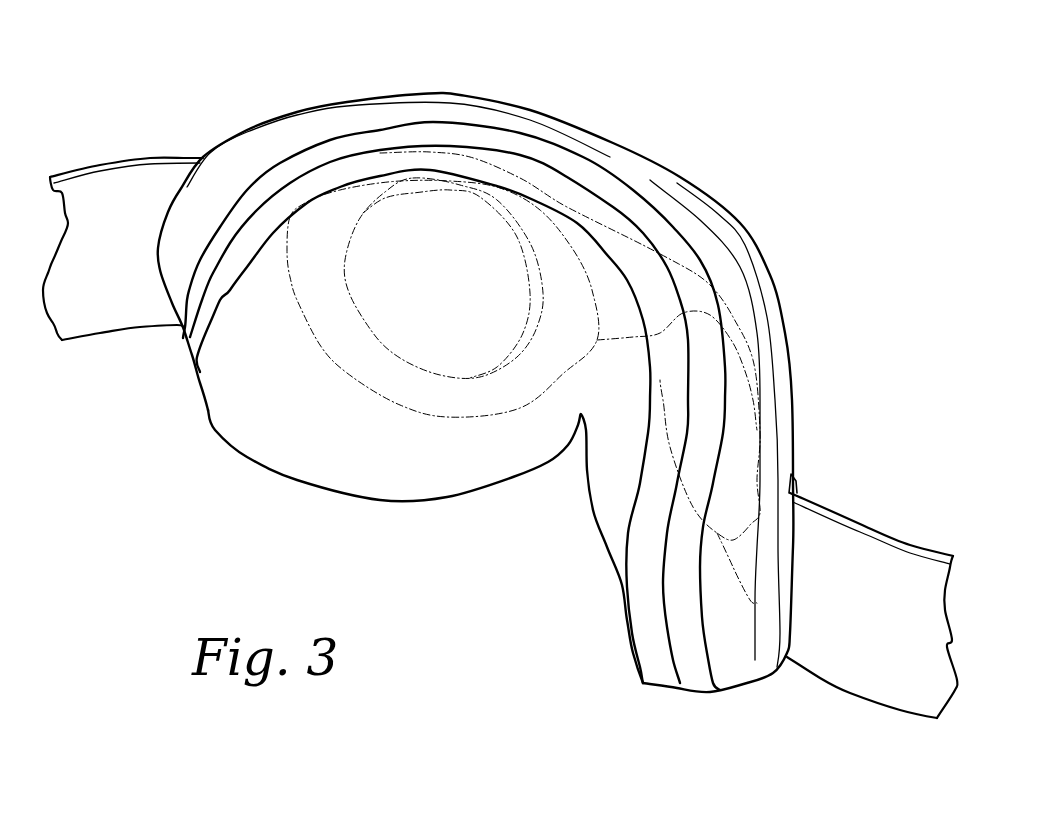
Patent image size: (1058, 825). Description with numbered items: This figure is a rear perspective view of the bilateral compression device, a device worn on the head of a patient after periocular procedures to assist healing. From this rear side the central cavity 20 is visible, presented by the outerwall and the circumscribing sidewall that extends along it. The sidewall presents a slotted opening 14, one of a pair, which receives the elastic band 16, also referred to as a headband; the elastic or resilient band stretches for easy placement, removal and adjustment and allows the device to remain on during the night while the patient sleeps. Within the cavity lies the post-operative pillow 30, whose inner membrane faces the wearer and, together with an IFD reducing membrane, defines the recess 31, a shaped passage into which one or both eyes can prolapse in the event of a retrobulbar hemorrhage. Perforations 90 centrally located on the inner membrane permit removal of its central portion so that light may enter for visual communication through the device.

The slotted opening 14 is at (793, 492).
The elastic band 16 is at (890, 587).
The central cavity 20 is at (335, 380).
The post-operative pillow 30 is at (468, 160).
The recess 31 is at (470, 336).
The perforations 90 is at (443, 378).